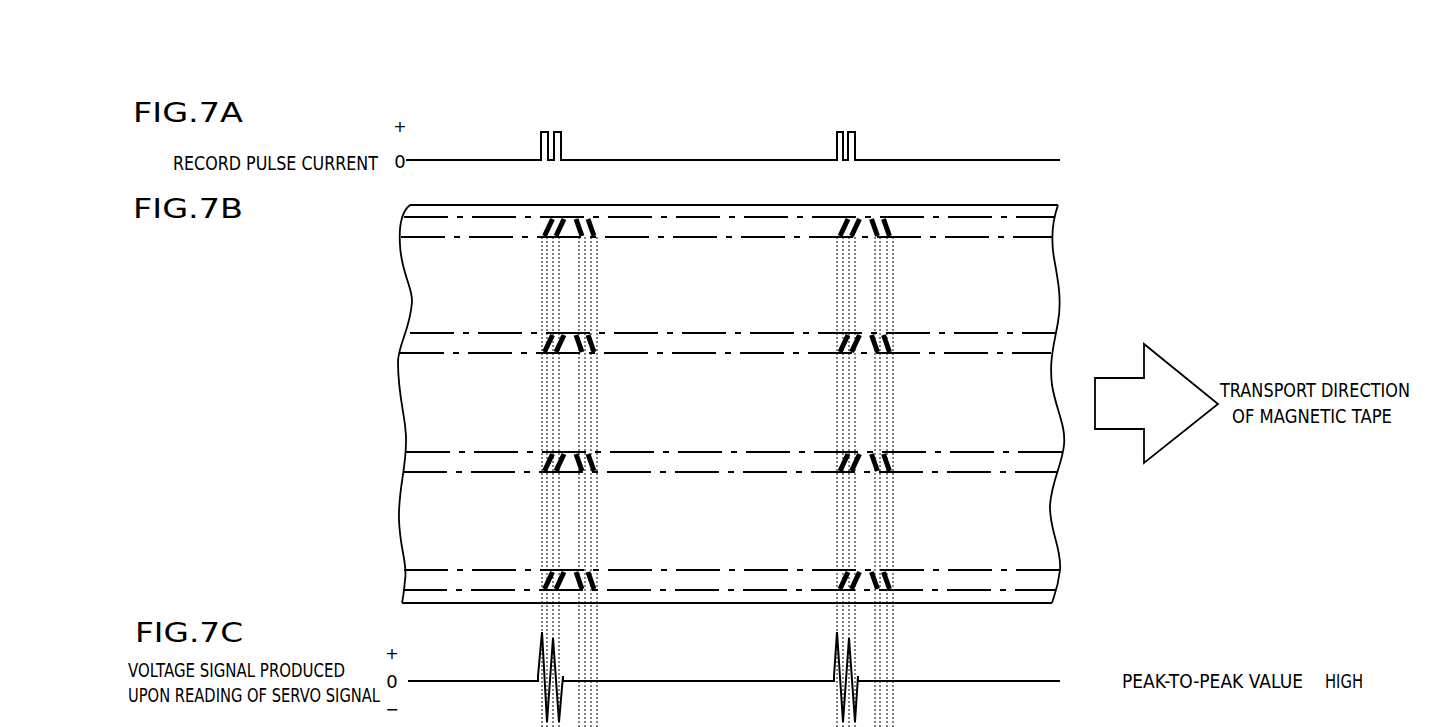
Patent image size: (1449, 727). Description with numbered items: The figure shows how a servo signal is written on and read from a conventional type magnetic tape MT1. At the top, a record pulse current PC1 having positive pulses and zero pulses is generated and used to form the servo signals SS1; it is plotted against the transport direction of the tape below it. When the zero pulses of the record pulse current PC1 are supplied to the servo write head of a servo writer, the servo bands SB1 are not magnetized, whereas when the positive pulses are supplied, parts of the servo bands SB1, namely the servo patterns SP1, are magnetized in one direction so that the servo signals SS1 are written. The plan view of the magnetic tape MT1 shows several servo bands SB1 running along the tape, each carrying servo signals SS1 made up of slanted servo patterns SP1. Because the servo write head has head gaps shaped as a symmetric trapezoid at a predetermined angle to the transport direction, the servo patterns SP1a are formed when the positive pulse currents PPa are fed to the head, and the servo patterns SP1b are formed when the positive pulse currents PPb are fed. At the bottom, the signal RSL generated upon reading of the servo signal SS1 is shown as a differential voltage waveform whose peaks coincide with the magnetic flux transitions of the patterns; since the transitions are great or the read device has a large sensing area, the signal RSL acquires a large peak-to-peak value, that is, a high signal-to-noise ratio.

In FIG. 7A, the record pulse current PC1 is at (965, 160).
In FIG. 7A, the positive pulse current PPa is at (837, 132).
In FIG. 7A, the positive pulse current PPb is at (853, 132).
In FIG. 7B, the magnetic tape MT1 is at (1008, 205).
In FIG. 7B, the servo signal SS1 is at (998, 227).
In FIG. 7B, the servo band SB1 is at (1012, 237).
In FIG. 7B, the servo pattern SP1 is at (599, 213).
In FIG. 7B, the servo pattern SP1a is at (870, 217).
In FIG. 7B, the servo pattern SP1b is at (848, 217).
In FIG. 7C, the signal generated upon reading of the servo signal RSL is at (1010, 681).